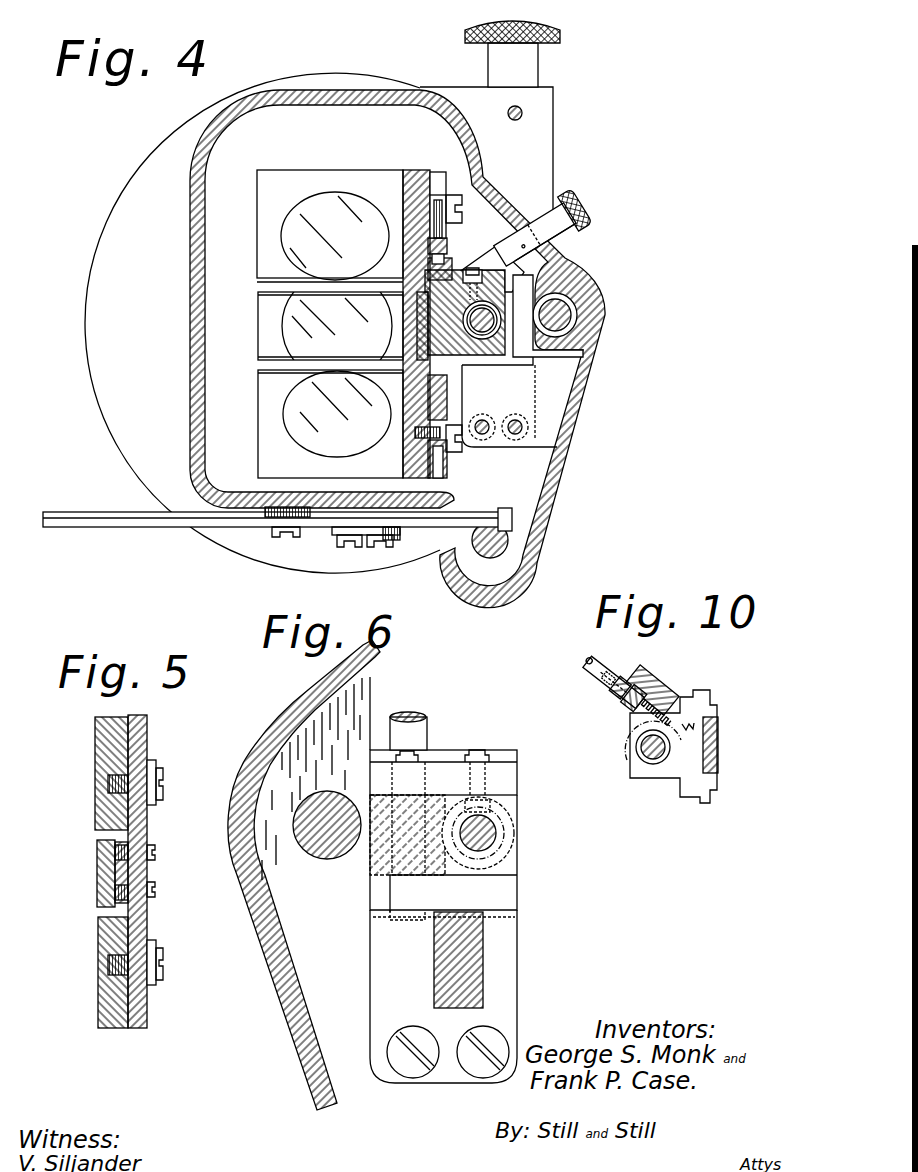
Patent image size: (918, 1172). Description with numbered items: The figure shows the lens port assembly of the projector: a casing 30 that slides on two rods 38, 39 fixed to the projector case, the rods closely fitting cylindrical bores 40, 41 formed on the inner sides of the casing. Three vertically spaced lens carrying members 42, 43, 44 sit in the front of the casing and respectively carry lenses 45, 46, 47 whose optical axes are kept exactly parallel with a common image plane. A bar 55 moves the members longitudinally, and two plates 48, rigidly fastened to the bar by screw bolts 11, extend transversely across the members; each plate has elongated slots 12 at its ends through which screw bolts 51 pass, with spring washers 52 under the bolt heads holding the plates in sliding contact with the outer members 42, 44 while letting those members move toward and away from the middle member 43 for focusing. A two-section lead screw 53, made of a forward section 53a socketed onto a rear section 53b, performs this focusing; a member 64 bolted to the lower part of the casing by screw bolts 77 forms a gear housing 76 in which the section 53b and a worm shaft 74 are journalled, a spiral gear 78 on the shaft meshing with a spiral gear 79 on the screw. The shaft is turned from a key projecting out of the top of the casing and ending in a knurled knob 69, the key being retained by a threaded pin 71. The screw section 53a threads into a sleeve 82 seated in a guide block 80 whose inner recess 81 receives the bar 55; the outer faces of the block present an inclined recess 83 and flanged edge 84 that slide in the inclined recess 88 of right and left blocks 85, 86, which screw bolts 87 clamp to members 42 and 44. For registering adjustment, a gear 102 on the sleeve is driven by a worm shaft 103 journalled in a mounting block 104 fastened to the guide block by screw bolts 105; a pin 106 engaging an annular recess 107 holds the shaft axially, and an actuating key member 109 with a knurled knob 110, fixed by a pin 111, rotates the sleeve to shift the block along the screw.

In FIG. 4, the casing 30 is at (196, 190).
In FIG. 6, the casing 30 is at (312, 712).
In FIG. 4, the lens carrying member 42 is at (262, 188).
In FIG. 5, the lens carrying member 42 is at (100, 743).
In FIG. 4, the lens 45 is at (285, 244).
In FIG. 4, the lens carrying member 43 is at (262, 309).
In FIG. 5, the lens carrying member 43 is at (98, 860).
In FIG. 4, the lens 46 is at (292, 334).
In FIG. 4, the lens carrying member 44 is at (262, 392).
In FIG. 5, the lens carrying member 44 is at (99, 938).
In FIG. 4, the lens 47 is at (296, 418).
In FIG. 4, the bar 55 is at (420, 308).
In FIG. 5, the bar 55 is at (122, 873).
In FIG. 10, the bar 55 is at (715, 745).
In FIG. 4, the guide block 80 is at (445, 330).
In FIG. 10, the guide block 80 is at (718, 704).
In FIG. 4, the recess 81 is at (412, 323).
In FIG. 4, the recess 83 is at (418, 272).
In FIG. 4, the flanged edge 84 is at (415, 256).
In FIG. 4, the block 85 is at (433, 170).
In FIG. 4, the block 86 is at (430, 418).
In FIG. 4, the screw bolts 87 is at (455, 205).
In FIG. 4, the inclined recess 88 is at (435, 392).
In FIG. 4, the forward lead screw section 53a is at (481, 340).
In FIG. 10, the forward lead screw section 53a is at (641, 752).
In FIG. 4, the mounting block 104 is at (487, 266).
In FIG. 10, the mounting block 104 is at (670, 698).
In FIG. 4, the screw bolts 105 is at (497, 250).
In FIG. 4, the actuating key member 109 is at (580, 236).
In FIG. 10, the actuating key member 109 is at (600, 666).
In FIG. 4, the knurled knob 110 is at (582, 210).
In FIG. 4, the cylindrical bore 40 is at (606, 307).
In FIG. 4, the rod 38 is at (575, 315).
In FIG. 6, the rod 38 is at (312, 852).
In FIG. 4, the member 64 is at (584, 355).
In FIG. 6, the member 64 is at (500, 932).
In FIG. 4, the sleeve 82 is at (527, 358).
In FIG. 4, the screw bolts 77 is at (516, 440).
In FIG. 6, the screw bolts 77 is at (464, 1044).
In FIG. 4, the knurled knob 69 is at (540, 60).
In FIG. 4, the pin 71 is at (522, 110).
In FIG. 4, the cylindrical bore 41 is at (505, 514).
In FIG. 4, the rod 39 is at (512, 550).
In FIG. 5, the plates 48 is at (148, 726).
In FIG. 5, the elongated slot 12 is at (128, 794).
In FIG. 5, the spring washers 52 is at (162, 770).
In FIG. 5, the screw bolts 51 is at (163, 795).
In FIG. 5, the screw bolts 11 is at (158, 888).
In FIG. 6, the worm shaft 74 is at (420, 716).
In FIG. 6, the gear housing 76 is at (518, 780).
In FIG. 6, the spiral gear 78 is at (400, 862).
In FIG. 6, the spiral gear 79 is at (505, 857).
In FIG. 6, the lead screw 53 is at (504, 834).
In FIG. 6, the rear lead screw section 53b is at (484, 838).
In FIG. 10, the gear 102 is at (636, 748).
In FIG. 10, the worm shaft 103 is at (620, 700).
In FIG. 10, the pin 106 is at (628, 712).
In FIG. 10, the annular recess 107 is at (660, 684).
In FIG. 10, the pin 111 is at (623, 686).